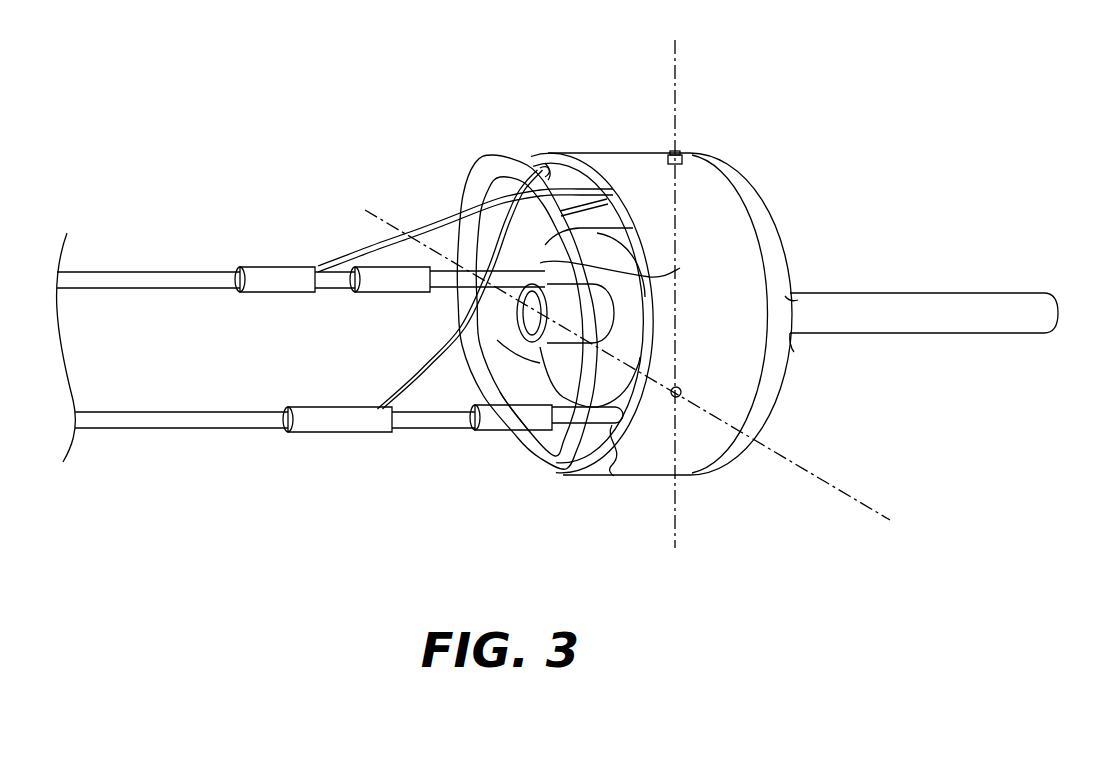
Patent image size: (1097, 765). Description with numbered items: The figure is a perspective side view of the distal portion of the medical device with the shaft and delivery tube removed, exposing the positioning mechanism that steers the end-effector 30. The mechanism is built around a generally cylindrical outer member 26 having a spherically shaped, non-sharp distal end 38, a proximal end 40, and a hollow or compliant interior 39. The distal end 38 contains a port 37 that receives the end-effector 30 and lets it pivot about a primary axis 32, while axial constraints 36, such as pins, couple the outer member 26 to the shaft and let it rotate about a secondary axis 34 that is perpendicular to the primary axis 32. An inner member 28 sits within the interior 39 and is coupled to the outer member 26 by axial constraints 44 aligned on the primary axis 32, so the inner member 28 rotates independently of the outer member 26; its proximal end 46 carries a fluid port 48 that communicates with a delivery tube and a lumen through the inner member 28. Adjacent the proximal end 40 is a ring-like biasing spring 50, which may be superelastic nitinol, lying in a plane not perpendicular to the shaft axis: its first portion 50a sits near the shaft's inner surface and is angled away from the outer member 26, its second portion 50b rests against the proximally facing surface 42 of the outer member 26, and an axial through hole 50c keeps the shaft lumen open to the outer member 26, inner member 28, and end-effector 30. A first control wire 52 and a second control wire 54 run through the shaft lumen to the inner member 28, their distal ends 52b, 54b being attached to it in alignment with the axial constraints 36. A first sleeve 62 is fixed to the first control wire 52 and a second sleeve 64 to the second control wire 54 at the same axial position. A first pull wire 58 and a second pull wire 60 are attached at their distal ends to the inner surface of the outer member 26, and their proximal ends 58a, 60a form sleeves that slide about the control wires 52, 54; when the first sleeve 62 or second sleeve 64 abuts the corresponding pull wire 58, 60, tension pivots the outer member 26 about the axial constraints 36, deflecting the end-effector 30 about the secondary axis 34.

The outer member 26 is at (612, 153).
The inner member 28 is at (580, 212).
The end-effector 30 is at (930, 293).
The primary axis 32 is at (675, 279).
The secondary axis 34 is at (648, 374).
The axial constraints 36 is at (682, 388).
The port 37 is at (795, 300).
The distal end 38 is at (757, 208).
The interior 39 is at (545, 163).
The proximal end 40 is at (530, 165).
The proximally facing surface 42 is at (616, 455).
The axial constraints 44 is at (682, 152).
The proximal end 46 is at (557, 367).
The fluid port 48 is at (488, 327).
The biasing spring 50 is at (521, 312).
The first portion 50a is at (491, 156).
The second portion 50b is at (568, 474).
The axial through hole 50c is at (556, 440).
The first control wire 52 is at (132, 272).
The distal end 52b is at (680, 268).
The second control wire 54 is at (175, 412).
The distal end 54b is at (623, 413).
The first pull wire 58 is at (428, 228).
The proximal end 58a is at (275, 267).
The second pull wire 60 is at (398, 405).
The proximal end 60a is at (317, 407).
The first sleeve 62 is at (385, 292).
The second sleeve 64 is at (495, 432).